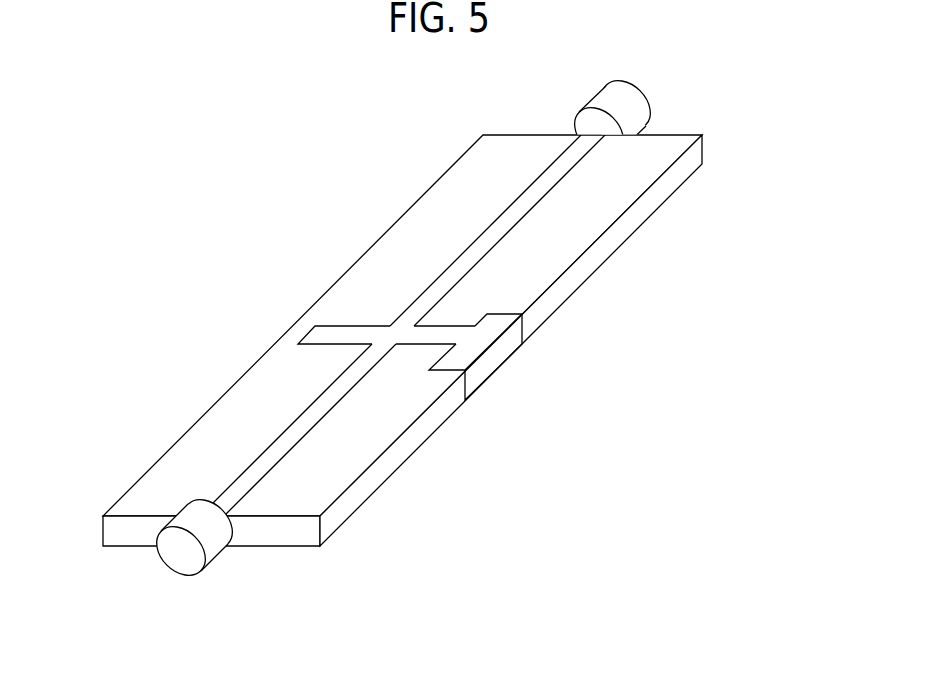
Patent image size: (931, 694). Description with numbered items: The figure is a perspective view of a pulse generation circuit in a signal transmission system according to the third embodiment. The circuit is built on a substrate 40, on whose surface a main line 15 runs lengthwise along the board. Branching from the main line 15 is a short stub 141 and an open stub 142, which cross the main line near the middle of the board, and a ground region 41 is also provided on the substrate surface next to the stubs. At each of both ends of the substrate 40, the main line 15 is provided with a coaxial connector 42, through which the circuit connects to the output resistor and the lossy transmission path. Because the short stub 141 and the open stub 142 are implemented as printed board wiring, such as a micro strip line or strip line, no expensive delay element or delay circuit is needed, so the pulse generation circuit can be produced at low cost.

The substrate 40 is at (360, 454).
The main line 15 is at (522, 208).
The short stub 141 is at (440, 337).
The open stub 142 is at (333, 333).
The ground region 41 is at (488, 360).
The coaxial connector 42 is at (595, 102).